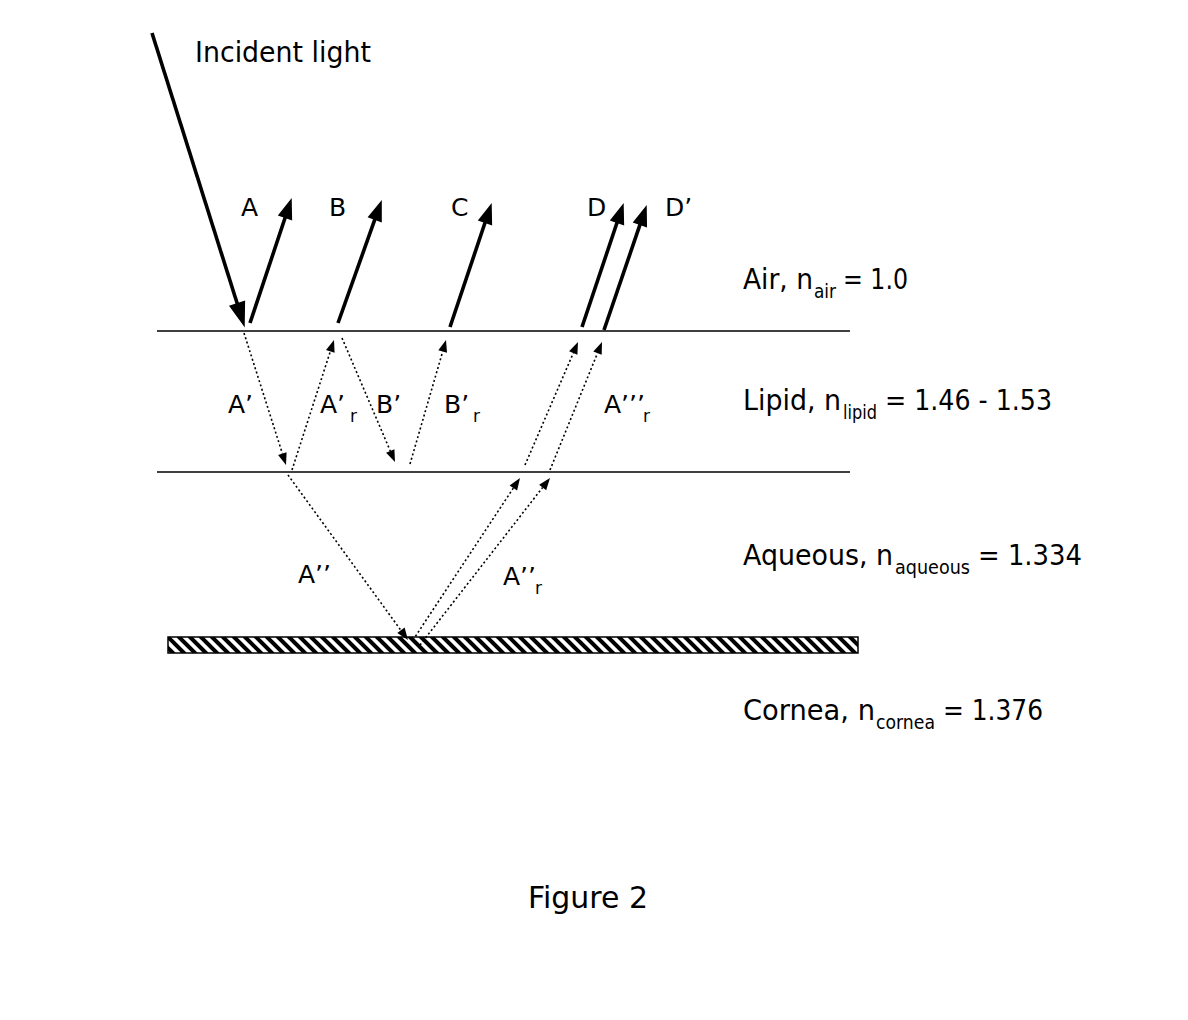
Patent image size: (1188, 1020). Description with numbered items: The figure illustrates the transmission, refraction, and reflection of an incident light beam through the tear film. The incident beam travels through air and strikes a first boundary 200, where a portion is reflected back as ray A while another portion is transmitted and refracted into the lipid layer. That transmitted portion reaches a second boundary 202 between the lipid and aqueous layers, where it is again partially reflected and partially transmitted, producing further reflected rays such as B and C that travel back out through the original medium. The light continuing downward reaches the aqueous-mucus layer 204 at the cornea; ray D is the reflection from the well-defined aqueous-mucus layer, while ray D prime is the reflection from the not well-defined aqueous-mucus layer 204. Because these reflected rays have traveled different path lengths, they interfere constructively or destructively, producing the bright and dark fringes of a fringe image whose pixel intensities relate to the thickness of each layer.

The air-lipid interface 200 is at (182, 330).
The lipid-aqueous interface 202 is at (182, 472).
The aqueous-mucus layer 204 is at (182, 650).